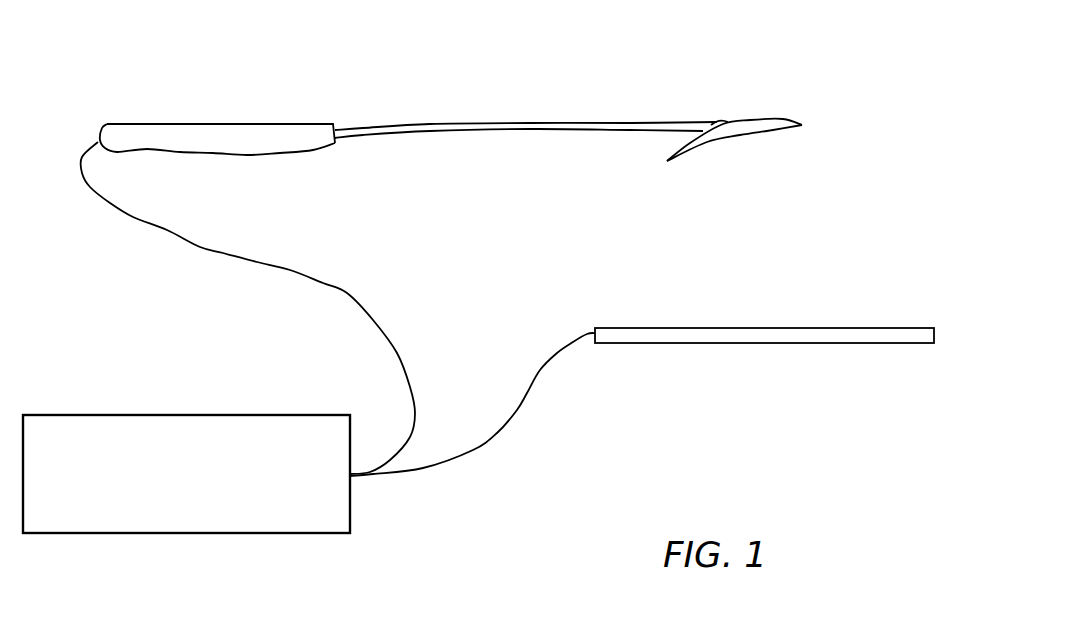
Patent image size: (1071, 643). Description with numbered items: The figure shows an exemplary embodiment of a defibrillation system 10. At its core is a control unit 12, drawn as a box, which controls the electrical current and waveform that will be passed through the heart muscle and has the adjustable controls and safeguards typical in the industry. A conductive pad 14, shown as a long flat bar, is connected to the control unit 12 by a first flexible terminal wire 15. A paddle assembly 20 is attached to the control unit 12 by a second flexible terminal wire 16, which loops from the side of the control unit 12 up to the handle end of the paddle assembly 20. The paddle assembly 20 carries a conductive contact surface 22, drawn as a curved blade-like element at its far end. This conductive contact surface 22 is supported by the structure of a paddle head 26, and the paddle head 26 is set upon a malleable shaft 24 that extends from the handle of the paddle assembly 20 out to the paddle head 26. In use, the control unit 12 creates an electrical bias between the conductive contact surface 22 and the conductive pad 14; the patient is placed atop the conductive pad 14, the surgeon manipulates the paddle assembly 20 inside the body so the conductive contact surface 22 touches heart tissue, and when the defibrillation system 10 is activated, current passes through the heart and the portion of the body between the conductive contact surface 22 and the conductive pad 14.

The defibrillation system 10 is at (98, 239).
The control unit 12 is at (187, 415).
The conductive pad 14 is at (785, 336).
The first flexible terminal wire 15 is at (525, 402).
The second flexible terminal wire 16 is at (347, 292).
The paddle assembly 20 is at (273, 102).
The conductive contact surface 22 is at (752, 137).
The malleable shaft 24 is at (577, 131).
The paddle head 26 is at (732, 120).